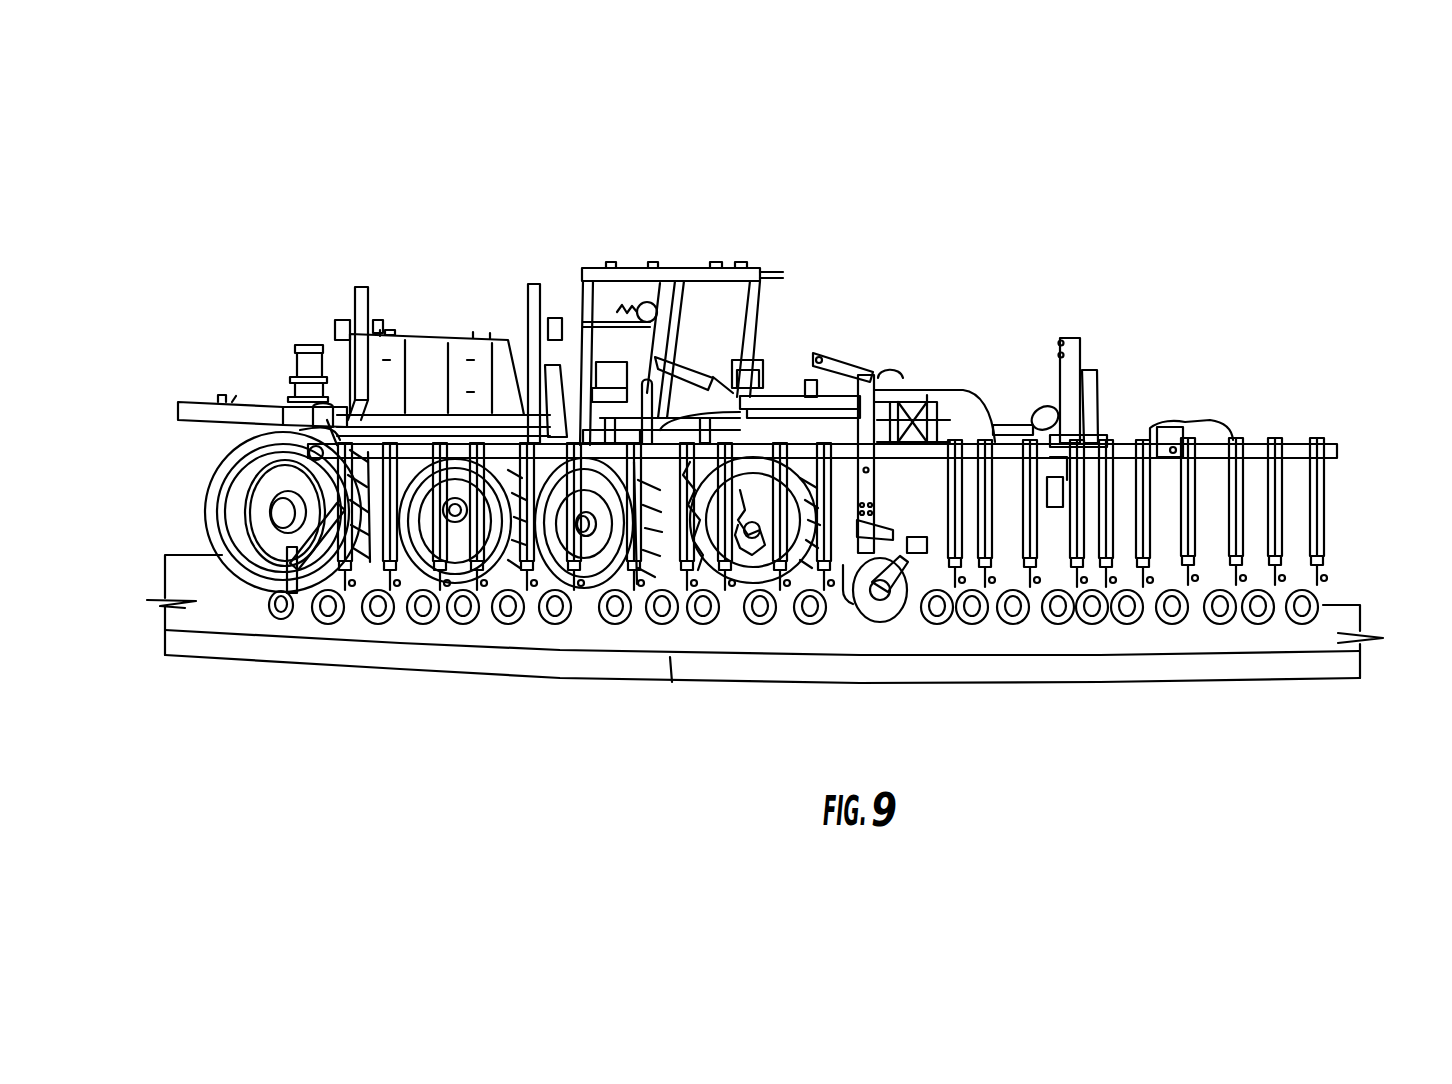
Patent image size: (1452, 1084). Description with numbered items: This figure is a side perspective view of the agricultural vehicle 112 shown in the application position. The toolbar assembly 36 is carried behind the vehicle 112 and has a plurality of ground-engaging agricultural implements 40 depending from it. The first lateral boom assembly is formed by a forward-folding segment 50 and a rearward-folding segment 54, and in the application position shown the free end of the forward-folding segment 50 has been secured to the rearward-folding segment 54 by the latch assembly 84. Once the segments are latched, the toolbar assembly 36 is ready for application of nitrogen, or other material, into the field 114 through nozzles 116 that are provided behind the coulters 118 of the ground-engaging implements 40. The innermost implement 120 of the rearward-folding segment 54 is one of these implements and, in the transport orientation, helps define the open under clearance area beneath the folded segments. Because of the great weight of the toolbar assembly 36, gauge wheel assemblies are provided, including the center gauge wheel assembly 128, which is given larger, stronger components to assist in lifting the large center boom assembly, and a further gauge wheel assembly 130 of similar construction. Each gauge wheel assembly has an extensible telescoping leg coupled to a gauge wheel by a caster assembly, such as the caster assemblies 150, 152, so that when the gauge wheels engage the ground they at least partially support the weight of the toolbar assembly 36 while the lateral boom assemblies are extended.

The tank 112 is at (487, 303).
The latch assembly 84 is at (680, 282).
The forward-folding segment 50 is at (680, 383).
The rearward-folding segment 54 is at (368, 438).
The toolbar assembly 36 is at (1008, 390).
The gauge wheel assembly 130 is at (1000, 513).
The caster assembly 152 is at (1248, 540).
The ground-engaging agricultural implements 40 is at (1280, 552).
The nozzles 116 is at (1323, 553).
The coulters 118 is at (1283, 587).
The field 114 is at (1333, 618).
The caster assembly 150 is at (257, 623).
The innermost implement 120 is at (355, 612).
The center gauge wheel assembly 128 is at (863, 637).